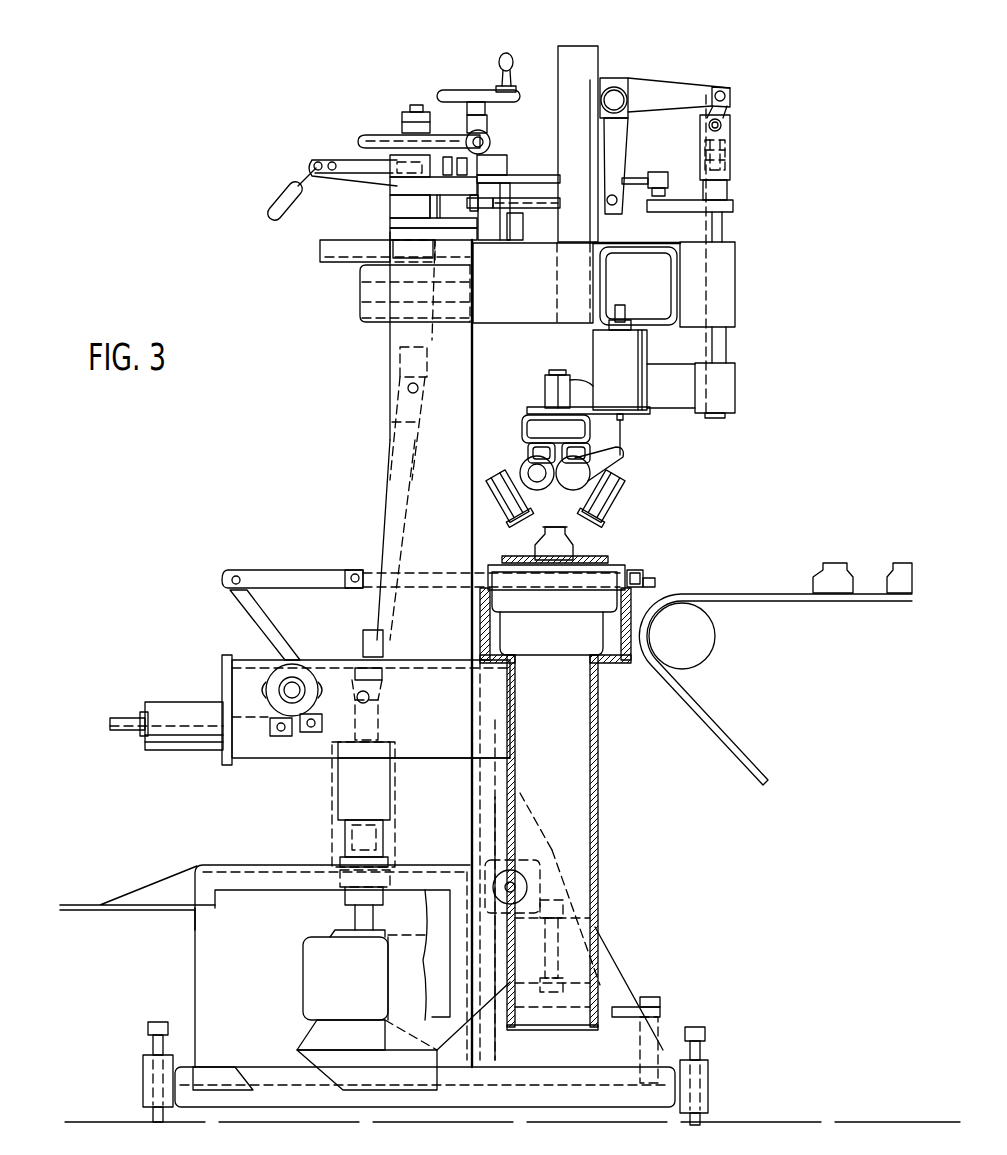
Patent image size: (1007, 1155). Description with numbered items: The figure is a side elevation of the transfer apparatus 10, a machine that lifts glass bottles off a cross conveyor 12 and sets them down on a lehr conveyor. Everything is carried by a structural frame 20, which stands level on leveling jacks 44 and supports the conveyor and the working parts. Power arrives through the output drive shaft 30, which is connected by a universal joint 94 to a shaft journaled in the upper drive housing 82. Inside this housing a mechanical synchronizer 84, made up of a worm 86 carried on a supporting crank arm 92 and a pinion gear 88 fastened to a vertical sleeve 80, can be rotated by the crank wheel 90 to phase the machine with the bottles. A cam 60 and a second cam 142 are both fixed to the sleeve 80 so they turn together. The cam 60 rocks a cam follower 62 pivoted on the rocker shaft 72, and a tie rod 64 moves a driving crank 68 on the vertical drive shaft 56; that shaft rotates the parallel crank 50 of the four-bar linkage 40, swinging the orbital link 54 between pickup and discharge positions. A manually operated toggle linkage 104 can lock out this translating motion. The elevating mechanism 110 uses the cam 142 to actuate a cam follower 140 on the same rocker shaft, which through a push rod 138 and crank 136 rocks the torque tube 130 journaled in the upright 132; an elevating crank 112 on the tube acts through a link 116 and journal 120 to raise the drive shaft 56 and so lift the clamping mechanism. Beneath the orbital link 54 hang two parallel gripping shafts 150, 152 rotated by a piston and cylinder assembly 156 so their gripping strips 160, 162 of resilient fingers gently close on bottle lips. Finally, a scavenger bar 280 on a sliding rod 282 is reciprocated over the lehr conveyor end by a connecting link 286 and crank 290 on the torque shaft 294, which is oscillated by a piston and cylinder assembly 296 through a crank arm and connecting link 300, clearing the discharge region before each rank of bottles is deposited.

The transfer apparatus 10 is at (200, 108).
The cross conveyor 12 is at (503, 560).
The structural frame 20 is at (600, 800).
The output drive shaft 30 is at (380, 514).
The parallel-crank four-bar linkage 40 is at (772, 393).
The leveling jacks 44 is at (158, 1032).
The parallel crank 50 is at (660, 418).
The orbital link 54 is at (523, 428).
The vertical drive shaft 56 is at (718, 225).
The cam 60 is at (392, 190).
The cam follower 62 is at (633, 168).
The tie rod 64 is at (658, 175).
The driving crank 68 is at (692, 208).
The rocker shaft 72 is at (488, 152).
The vertical sleeve 80 is at (410, 208).
The upper drive housing 82 is at (350, 294).
The mechanical synchronizer 84 is at (403, 108).
The worm 86 is at (490, 137).
The pinion gear 88 is at (372, 140).
The crank wheel 90 is at (460, 90).
The supporting crank arm 92 is at (445, 130).
The universal joint 94 is at (400, 414).
The toggle linkage 104 is at (280, 198).
The elevating mechanism 110 is at (750, 101).
The elevating crank 112 is at (668, 85).
The link 116 is at (722, 110).
The journal 120 is at (728, 150).
The torque tube 130 is at (615, 90).
The upright 132 is at (580, 52).
The crank 136 is at (628, 196).
The push rod 138 is at (546, 210).
The cam follower 140 is at (493, 190).
The cam 142 is at (402, 224).
The gripping shaft 150 is at (537, 492).
The gripping shaft 152 is at (571, 492).
The piston and cylinder assembly 156 is at (620, 355).
The gripping strip 160 is at (500, 512).
The gripping strip 162 is at (612, 510).
The scavenger bar 280 is at (636, 570).
The rod 282 is at (427, 598).
The connecting link 286 is at (293, 572).
The crank 290 is at (255, 612).
The torque shaft 294 is at (292, 688).
The piston and cylinder assembly 296 is at (170, 700).
The crank arm and connecting link 300 is at (300, 728).